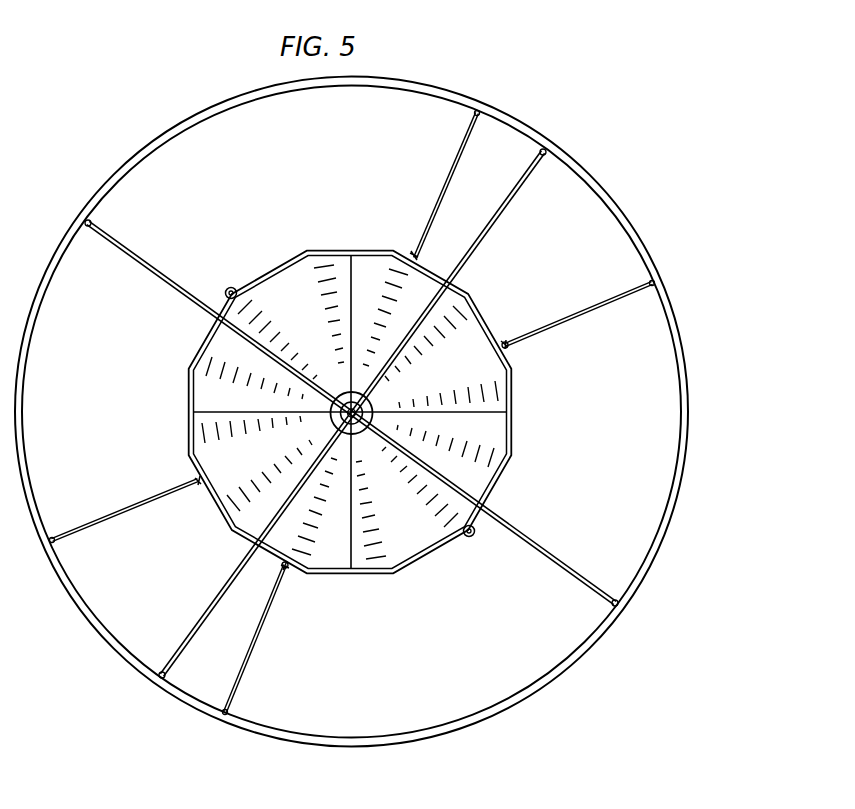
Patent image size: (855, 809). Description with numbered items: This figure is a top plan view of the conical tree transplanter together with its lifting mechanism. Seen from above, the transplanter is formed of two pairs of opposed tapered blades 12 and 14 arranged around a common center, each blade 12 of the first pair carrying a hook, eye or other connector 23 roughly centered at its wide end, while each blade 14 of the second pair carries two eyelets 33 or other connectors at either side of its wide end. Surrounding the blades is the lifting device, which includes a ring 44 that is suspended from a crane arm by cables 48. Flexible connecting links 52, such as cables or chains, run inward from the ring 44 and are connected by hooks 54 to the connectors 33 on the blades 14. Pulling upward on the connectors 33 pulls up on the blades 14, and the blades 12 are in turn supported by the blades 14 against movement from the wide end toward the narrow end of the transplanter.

The ring 44 is at (640, 242).
The cables 48 is at (143, 266).
The flexible connecting links 52 is at (445, 188).
The eyelets 33 is at (413, 252).
The hooks 54 is at (506, 340).
The connector 23 is at (227, 288).
The tapered blade 12 is at (292, 283).
The tapered blade 14 is at (478, 317).